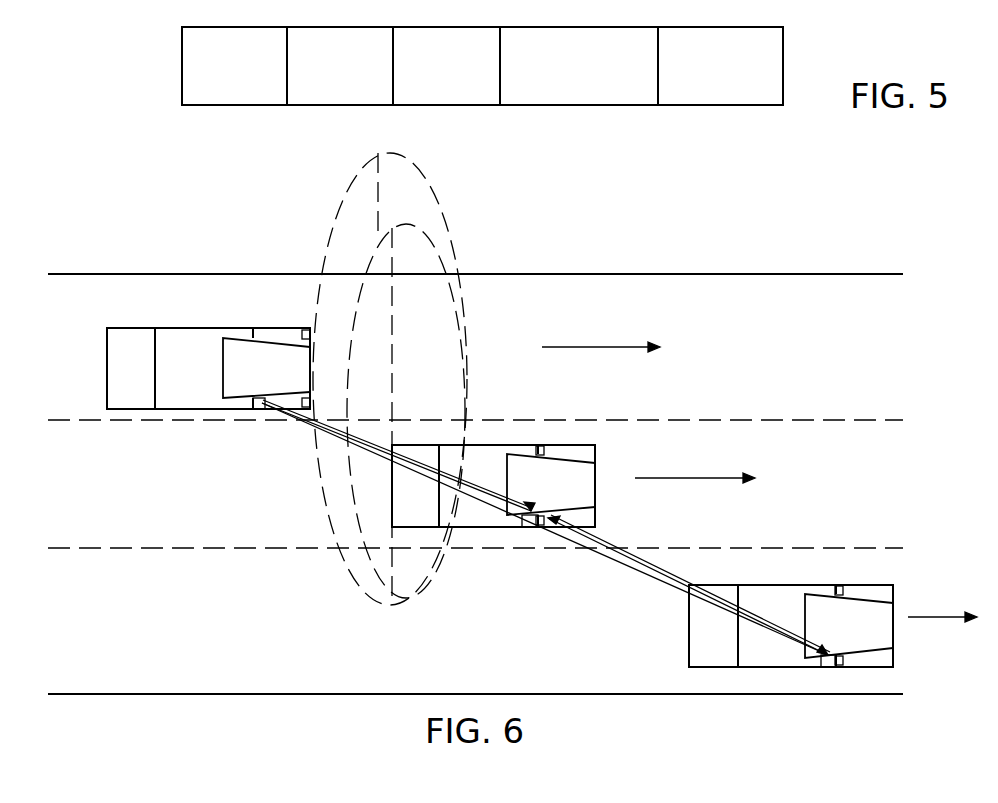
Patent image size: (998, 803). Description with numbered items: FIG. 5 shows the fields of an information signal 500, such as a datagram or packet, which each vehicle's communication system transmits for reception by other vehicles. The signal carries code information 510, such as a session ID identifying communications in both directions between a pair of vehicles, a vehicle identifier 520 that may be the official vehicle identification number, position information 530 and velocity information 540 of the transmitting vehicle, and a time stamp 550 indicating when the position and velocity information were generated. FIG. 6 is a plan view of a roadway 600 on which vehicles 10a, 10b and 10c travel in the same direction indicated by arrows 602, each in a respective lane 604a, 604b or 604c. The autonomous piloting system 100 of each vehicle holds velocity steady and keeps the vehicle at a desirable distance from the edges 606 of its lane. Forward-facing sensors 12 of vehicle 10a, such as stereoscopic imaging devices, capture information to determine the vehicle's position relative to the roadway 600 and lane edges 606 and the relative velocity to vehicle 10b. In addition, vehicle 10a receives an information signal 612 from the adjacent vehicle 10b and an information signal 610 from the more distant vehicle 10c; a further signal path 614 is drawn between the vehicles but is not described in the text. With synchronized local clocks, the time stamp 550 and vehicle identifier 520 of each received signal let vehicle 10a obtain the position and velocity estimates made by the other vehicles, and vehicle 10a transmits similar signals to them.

In FIG. 5, the information signal 500 is at (152, 65).
In FIG. 5, the code information 510 is at (202, 105).
In FIG. 5, the vehicle identifier 520 is at (314, 105).
In FIG. 5, the position information 530 is at (476, 105).
In FIG. 5, the velocity information 540 is at (579, 105).
In FIG. 5, the time stamp 550 is at (703, 105).
In FIG. 6, the vehicle 10a is at (203, 381).
In FIG. 6, the vehicle 10b is at (496, 469).
In FIG. 6, the vehicle 10c is at (792, 609).
In FIG. 6, the forward-facing sensors 12 is at (306, 330).
In FIG. 6, the autonomous piloting system 100 is at (258, 409).
In FIG. 6, the roadway 600 is at (706, 292).
In FIG. 6, the arrows 602 is at (612, 348).
In FIG. 6, the lane 604a is at (882, 363).
In FIG. 6, the lane 604b is at (882, 494).
In FIG. 6, the lane 604c is at (235, 628).
In FIG. 6, the lane edges 606 is at (870, 274).
In FIG. 6, the information signal 610 is at (366, 465).
In FIG. 6, the information signal 612 is at (372, 448).
In FIG. 6, the line of sight to third vehicle 614 is at (605, 545).